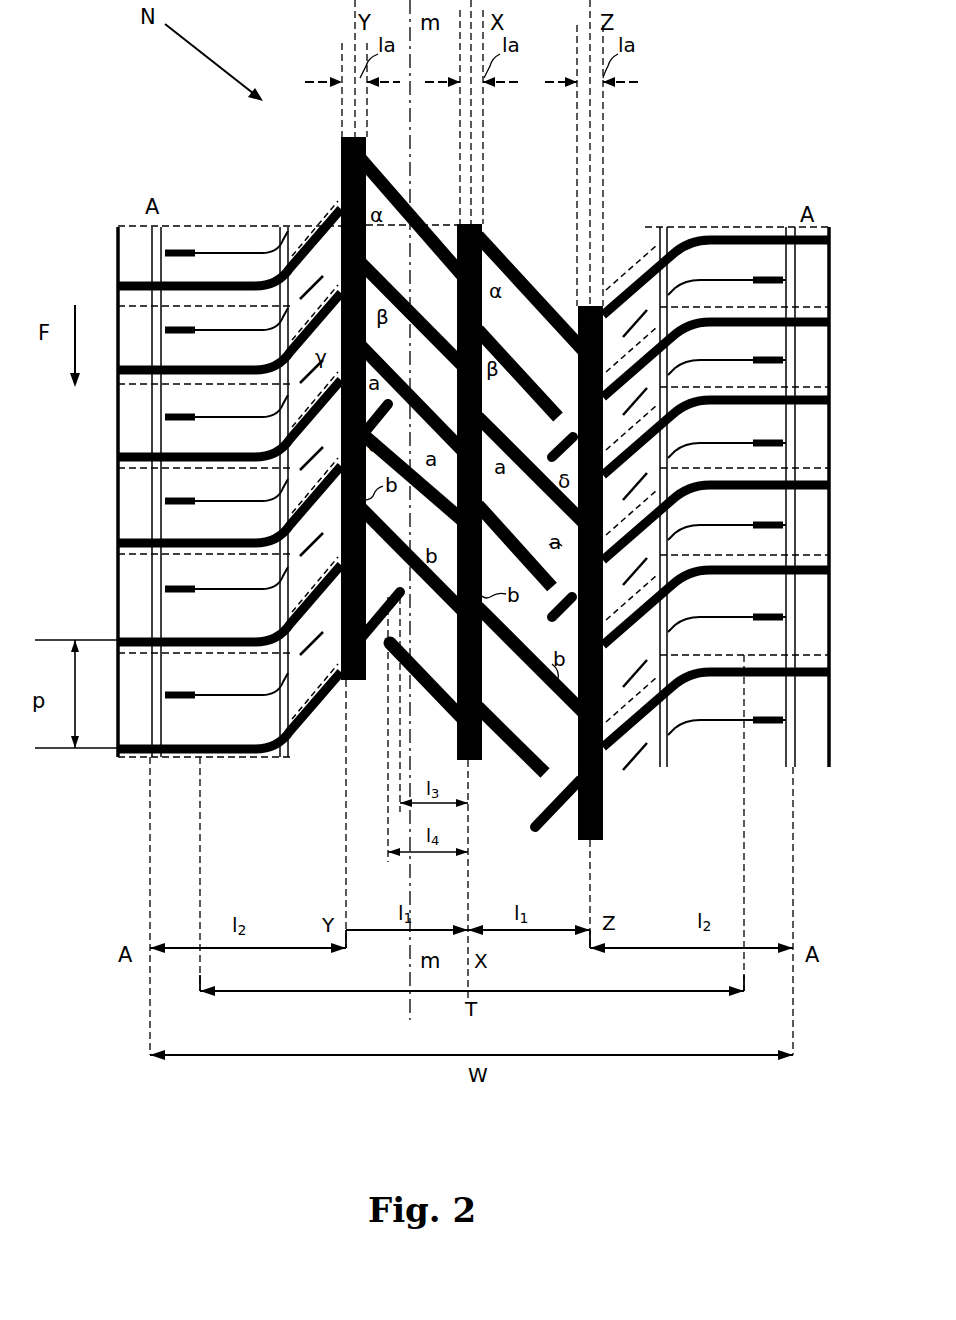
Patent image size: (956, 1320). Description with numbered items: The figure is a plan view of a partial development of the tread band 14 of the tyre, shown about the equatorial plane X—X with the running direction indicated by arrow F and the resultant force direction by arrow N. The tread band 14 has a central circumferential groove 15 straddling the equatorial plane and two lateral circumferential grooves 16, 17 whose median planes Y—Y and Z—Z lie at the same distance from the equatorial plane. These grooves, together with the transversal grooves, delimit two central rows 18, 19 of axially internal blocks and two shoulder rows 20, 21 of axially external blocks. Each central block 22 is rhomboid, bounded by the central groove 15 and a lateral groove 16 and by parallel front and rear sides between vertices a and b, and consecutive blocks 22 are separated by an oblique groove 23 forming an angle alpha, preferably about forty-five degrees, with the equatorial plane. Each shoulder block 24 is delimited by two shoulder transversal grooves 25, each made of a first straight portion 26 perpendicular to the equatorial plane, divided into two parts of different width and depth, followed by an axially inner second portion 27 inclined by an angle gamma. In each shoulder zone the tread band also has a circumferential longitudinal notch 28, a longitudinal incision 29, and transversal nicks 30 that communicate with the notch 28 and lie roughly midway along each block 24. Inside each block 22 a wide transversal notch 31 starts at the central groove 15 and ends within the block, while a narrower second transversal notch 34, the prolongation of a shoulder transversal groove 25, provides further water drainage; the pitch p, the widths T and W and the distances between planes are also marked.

The tread band 14 is at (665, 121).
The central circumferential groove 15 is at (486, 228).
The lateral circumferential groove 16 is at (341, 144).
The lateral circumferential groove 17 is at (603, 300).
The central row of blocks 18 is at (413, 226).
The central row of blocks 19 is at (550, 340).
The shoulder row of blocks 20 is at (195, 275).
The shoulder row of blocks 21 is at (712, 262).
The central block 22 is at (525, 292).
The oblique groove 23 is at (418, 400).
The shoulder block 24 is at (222, 352).
The shoulder transversal groove 25 is at (210, 634).
The first straight portion 26 is at (210, 758).
The second portion 27 is at (298, 336).
The longitudinal notch 28 is at (152, 762).
The longitudinal incision 29 is at (280, 758).
The transversal nick 30 is at (180, 420).
The transversal notch 31 is at (426, 688).
The second transversal notch 34 is at (380, 608).